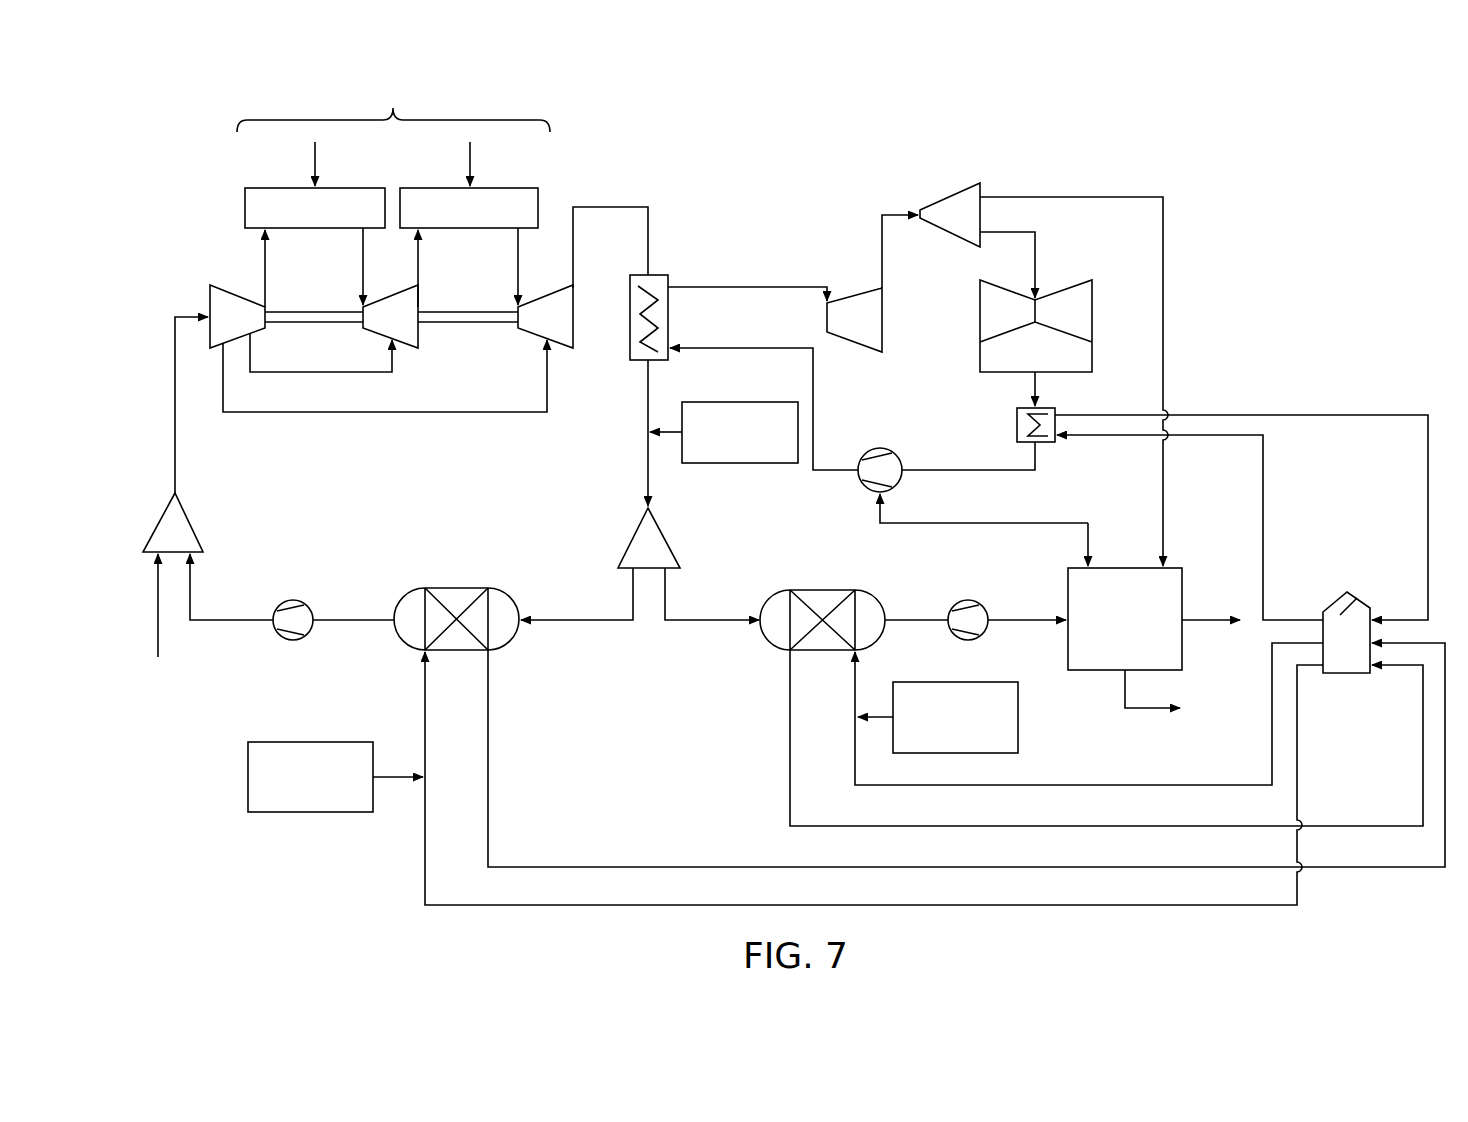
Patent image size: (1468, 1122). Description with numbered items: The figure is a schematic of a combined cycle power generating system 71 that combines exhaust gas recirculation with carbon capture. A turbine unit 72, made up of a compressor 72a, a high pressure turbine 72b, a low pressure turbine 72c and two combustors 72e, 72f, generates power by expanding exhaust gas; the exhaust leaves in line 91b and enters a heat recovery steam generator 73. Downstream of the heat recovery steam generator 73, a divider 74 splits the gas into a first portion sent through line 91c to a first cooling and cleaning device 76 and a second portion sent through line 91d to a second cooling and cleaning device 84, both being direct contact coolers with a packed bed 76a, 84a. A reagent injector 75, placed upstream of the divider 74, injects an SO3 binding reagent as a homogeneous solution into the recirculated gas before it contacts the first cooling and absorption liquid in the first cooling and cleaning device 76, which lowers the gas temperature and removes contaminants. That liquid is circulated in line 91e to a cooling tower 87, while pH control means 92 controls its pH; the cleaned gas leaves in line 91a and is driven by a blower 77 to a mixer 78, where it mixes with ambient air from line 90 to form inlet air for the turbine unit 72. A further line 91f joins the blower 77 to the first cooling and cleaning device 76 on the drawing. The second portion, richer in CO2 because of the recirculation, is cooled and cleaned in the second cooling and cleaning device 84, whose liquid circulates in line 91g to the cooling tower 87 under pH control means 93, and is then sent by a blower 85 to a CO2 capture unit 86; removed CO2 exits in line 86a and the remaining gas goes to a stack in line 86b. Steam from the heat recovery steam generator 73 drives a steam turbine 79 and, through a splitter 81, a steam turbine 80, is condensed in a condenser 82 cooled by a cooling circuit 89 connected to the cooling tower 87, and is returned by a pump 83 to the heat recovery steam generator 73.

The combined cycle power generating system 71 is at (224, 851).
The turbine unit 72 is at (393, 109).
The compressor 72a is at (232, 298).
The high pressure turbine 72b is at (390, 300).
The low pressure turbine 72c is at (544, 300).
The combustor 72e is at (268, 188).
The combustor 72f is at (503, 188).
The heat recovery steam generator 73 is at (640, 304).
The divider 74 is at (646, 542).
The reagent injector 75 is at (740, 463).
The first cooling and cleaning device 76 is at (512, 598).
The packed bed 76a is at (456, 598).
The blower 77 is at (293, 599).
The mixer 78 is at (160, 520).
The steam turbine 79 is at (856, 310).
The steam turbine 80 is at (1070, 305).
The splitter 81 is at (958, 208).
The condenser 82 is at (1017, 423).
The pump 83 is at (880, 447).
The second cooling and cleaning device 84 is at (772, 590).
The packed bed 84a is at (820, 652).
The blower 85 is at (968, 599).
The CO2 capture unit 86 is at (1125, 568).
The line 86a is at (1146, 708).
The line 86b is at (1210, 620).
The cooling tower 87 is at (1357, 598).
The cooling circuit 89 is at (1227, 415).
The line 90 is at (158, 603).
The line 91a is at (175, 403).
The line 91b is at (612, 207).
The line 91c is at (574, 618).
The line 91d is at (700, 622).
The line 91e is at (488, 756).
The line from first reactor vessel 91f is at (354, 618).
The line 91g is at (790, 737).
The pH control means 92 is at (248, 775).
The pH control means 93 is at (1018, 717).